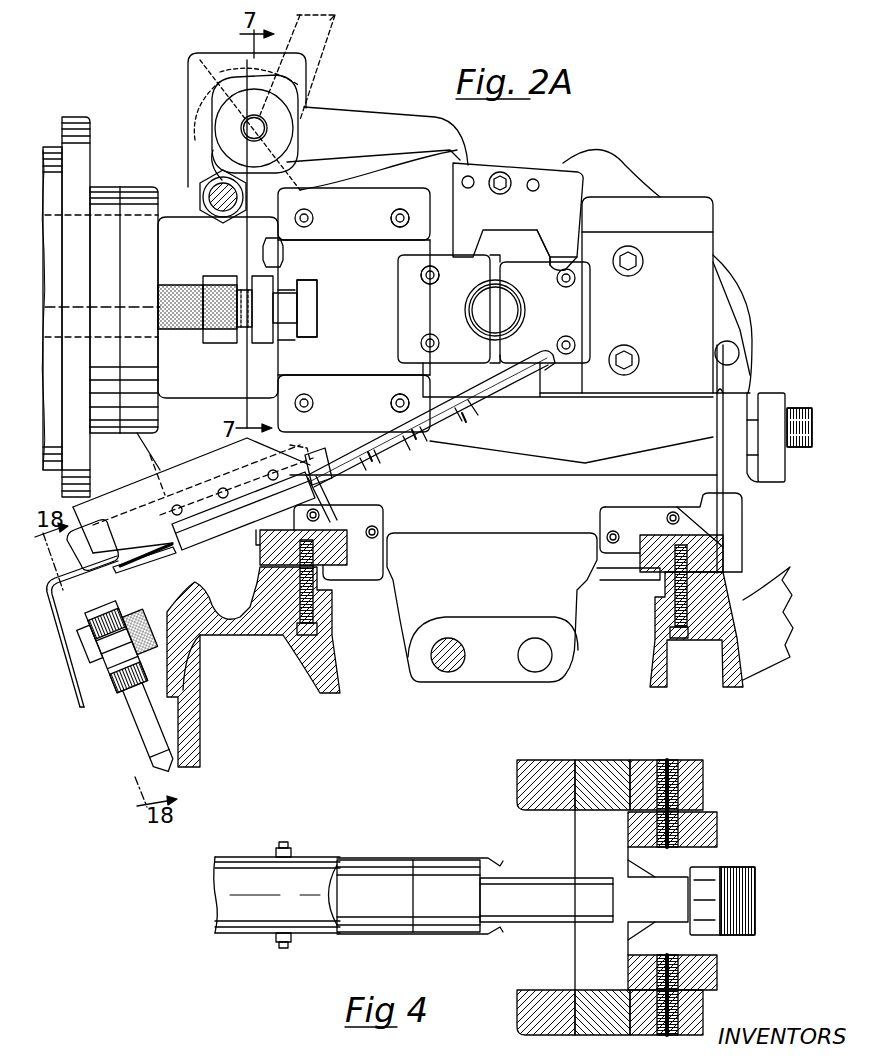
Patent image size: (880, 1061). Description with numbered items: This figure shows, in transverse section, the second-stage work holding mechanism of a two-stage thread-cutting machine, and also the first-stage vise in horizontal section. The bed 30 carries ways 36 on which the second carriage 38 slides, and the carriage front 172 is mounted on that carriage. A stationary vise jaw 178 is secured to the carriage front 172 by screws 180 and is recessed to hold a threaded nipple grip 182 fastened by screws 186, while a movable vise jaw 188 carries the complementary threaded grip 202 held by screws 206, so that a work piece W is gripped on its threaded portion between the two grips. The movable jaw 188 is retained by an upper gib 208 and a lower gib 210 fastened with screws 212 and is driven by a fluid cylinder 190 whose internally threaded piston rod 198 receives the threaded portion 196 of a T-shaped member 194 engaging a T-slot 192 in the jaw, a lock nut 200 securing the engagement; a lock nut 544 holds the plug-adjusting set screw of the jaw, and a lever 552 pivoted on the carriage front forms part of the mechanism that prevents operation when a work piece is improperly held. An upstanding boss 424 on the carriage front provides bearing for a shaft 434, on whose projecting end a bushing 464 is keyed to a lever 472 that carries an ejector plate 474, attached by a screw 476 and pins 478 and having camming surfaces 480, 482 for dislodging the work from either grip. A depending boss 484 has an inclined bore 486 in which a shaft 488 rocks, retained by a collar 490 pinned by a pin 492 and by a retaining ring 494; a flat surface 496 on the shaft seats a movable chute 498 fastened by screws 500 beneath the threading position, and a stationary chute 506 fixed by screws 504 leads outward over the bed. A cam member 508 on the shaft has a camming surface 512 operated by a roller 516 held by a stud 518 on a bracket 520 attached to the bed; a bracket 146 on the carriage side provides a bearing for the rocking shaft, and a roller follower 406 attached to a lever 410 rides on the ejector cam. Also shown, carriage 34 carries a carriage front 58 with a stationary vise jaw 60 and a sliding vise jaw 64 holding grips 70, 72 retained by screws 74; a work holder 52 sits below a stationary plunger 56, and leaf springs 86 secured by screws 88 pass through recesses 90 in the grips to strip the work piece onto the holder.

In FIG. 2A, the pneumatic cylinder 190 is at (107, 190).
In FIG. 2A, the upstanding boss 424 is at (218, 58).
In FIG. 2A, the bushing 464 is at (272, 122).
In FIG. 2A, the shaft 434 is at (258, 130).
In FIG. 2A, the lever 472 is at (387, 118).
In FIG. 2A, the second vise jaw 188 is at (454, 346).
In FIG. 2A, the upper gib 208 is at (354, 214).
In FIG. 2A, the lower gib 210 is at (354, 403).
In FIG. 2A, the screws 212 is at (397, 208).
In FIG. 2A, the piston rod 198 is at (170, 282).
In FIG. 2A, the lock nut 200 is at (217, 277).
In FIG. 2A, the threaded portion 196 is at (185, 328).
In FIG. 2A, the lock nut 544 is at (283, 253).
In FIG. 2A, the T-slot 192 is at (305, 281).
In FIG. 2A, the T-shaped member 194 is at (308, 313).
In FIG. 2A, the threaded nipple grip 202 is at (444, 309).
In FIG. 2A, the screws 206 is at (438, 272).
In FIG. 2A, the threaded nipple grip 182 is at (580, 295).
In FIG. 2A, the work piece W is at (520, 306).
In FIG. 4, the work piece W is at (753, 885).
In FIG. 2A, the stationary vise jaw 178 is at (647, 295).
In FIG. 2A, the carriage front 172 is at (620, 177).
In FIG. 2A, the screws 180 is at (643, 259).
In FIG. 2A, the screws 186 is at (619, 351).
In FIG. 2A, the ejector plate 474 is at (553, 180).
In FIG. 2A, the pins 478 is at (530, 180).
In FIG. 2A, the screw 476 is at (500, 192).
In FIG. 2A, the camming surface 482 is at (480, 240).
In FIG. 2A, the camming surface 480 is at (558, 243).
In FIG. 2A, the bracket 146 is at (740, 300).
In FIG. 2A, the lever 552 is at (732, 340).
In FIG. 2A, the lever 410 is at (768, 395).
In FIG. 2A, the roller follower 406 is at (800, 448).
In FIG. 2A, the stationary chute 506 is at (143, 488).
In FIG. 2A, the screws 504 is at (177, 505).
In FIG. 2A, the bore 486 is at (236, 490).
In FIG. 2A, the pin 492 is at (307, 462).
In FIG. 2A, the boss 484 is at (200, 538).
In FIG. 2A, the collar 490 is at (330, 483).
In FIG. 2A, the flat surface 496 is at (440, 430).
In FIG. 2A, the chute 498 is at (373, 463).
In FIG. 2A, the screws 500 is at (480, 423).
In FIG. 2A, the cam member 508 is at (87, 521).
In FIG. 2A, the retaining ring 494 is at (168, 554).
In FIG. 2A, the shaft 488 is at (130, 568).
In FIG. 2A, the stud 518 is at (90, 673).
In FIG. 2A, the roller 516 is at (120, 694).
In FIG. 2A, the camming surface 512 is at (143, 735).
In FIG. 2A, the bed 30 is at (193, 700).
In FIG. 2A, the bracket 520 is at (167, 657).
In FIG. 2A, the ways 36 is at (333, 537).
In FIG. 2A, the second carriage 38 is at (492, 595).
In FIG. 4, the stationary plunger 56 is at (245, 860).
In FIG. 4, the screws 88 is at (282, 846).
In FIG. 4, the leaf springs 86 is at (457, 857).
In FIG. 4, the work holder 52 is at (585, 883).
In FIG. 4, the carriage 34 is at (530, 780).
In FIG. 4, the carriage front 58 is at (617, 773).
In FIG. 4, the second vise jaw 64 is at (702, 784).
In FIG. 4, the stationary vise jaw 60 is at (698, 1007).
In FIG. 4, the grip 72 is at (708, 828).
In FIG. 4, the grip 70 is at (707, 970).
In FIG. 4, the screws 74 is at (663, 773).
In FIG. 4, the recess 90 is at (657, 870).